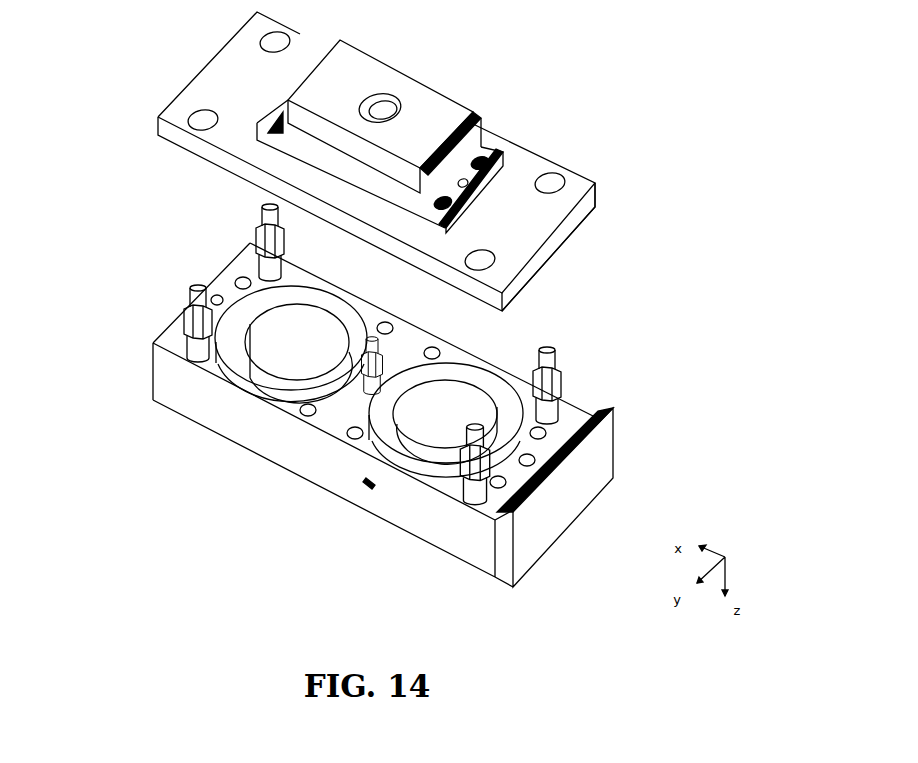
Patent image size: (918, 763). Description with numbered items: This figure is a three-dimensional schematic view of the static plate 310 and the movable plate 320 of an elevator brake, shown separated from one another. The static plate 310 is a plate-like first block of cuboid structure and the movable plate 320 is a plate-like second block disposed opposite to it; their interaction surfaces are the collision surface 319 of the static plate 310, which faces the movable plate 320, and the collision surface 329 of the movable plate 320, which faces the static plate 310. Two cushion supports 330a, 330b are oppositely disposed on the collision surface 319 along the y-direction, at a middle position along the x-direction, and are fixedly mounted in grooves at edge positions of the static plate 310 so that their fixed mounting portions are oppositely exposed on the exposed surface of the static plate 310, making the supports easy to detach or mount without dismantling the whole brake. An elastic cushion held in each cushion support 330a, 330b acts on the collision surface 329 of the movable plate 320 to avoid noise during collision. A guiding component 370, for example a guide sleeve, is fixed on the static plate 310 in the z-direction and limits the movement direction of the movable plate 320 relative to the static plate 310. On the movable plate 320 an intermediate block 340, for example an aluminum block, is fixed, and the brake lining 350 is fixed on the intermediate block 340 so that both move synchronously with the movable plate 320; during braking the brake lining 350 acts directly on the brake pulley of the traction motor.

The static plate 310 is at (187, 406).
The collision surface of the static plate 319 is at (477, 356).
The movable plate 320 is at (520, 168).
The collision surface of the movable plate 329 is at (542, 275).
The cushion support 330a is at (540, 453).
The cushion support 330b is at (222, 292).
The intermediate block 340 is at (290, 139).
The brake lining 350 is at (358, 62).
The guiding component 370 is at (193, 345).